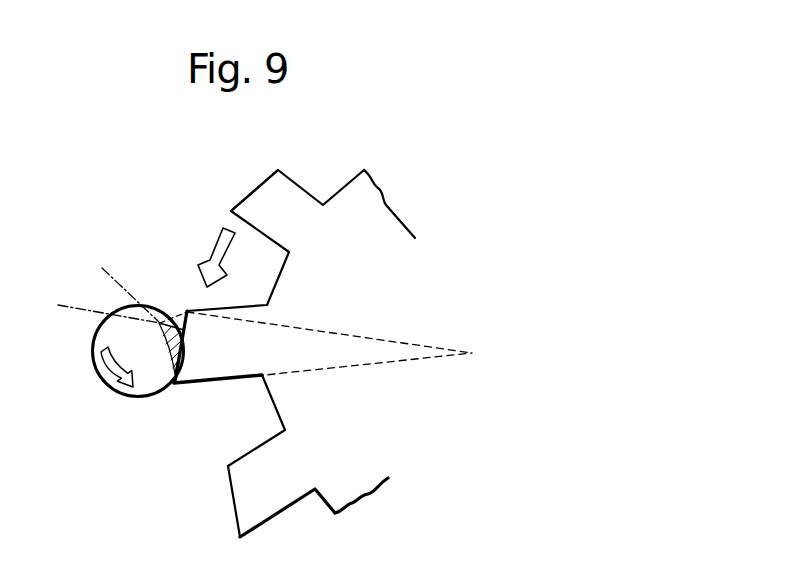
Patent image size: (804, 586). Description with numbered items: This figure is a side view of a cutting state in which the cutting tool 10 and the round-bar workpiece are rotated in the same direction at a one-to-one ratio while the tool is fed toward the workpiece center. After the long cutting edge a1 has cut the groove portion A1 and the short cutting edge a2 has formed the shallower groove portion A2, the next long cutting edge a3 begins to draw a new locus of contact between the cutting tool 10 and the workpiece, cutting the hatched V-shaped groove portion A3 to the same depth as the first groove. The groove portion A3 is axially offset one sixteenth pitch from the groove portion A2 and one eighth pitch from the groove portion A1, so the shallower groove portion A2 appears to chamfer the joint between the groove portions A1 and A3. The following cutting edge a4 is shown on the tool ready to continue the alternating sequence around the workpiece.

The cutting tool 10 is at (397, 216).
The cutting edge a4 is at (257, 198).
The long cutting edge a3 is at (210, 370).
The short cutting edge a2 is at (245, 505).
The groove portion A1 is at (122, 305).
The groove portion A2 is at (159, 323).
The groove portion A3 is at (173, 365).